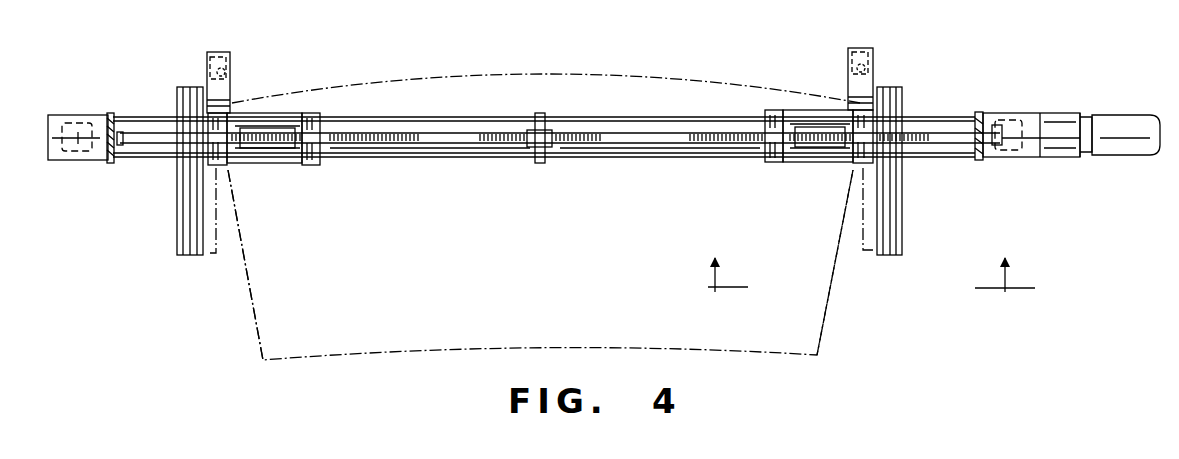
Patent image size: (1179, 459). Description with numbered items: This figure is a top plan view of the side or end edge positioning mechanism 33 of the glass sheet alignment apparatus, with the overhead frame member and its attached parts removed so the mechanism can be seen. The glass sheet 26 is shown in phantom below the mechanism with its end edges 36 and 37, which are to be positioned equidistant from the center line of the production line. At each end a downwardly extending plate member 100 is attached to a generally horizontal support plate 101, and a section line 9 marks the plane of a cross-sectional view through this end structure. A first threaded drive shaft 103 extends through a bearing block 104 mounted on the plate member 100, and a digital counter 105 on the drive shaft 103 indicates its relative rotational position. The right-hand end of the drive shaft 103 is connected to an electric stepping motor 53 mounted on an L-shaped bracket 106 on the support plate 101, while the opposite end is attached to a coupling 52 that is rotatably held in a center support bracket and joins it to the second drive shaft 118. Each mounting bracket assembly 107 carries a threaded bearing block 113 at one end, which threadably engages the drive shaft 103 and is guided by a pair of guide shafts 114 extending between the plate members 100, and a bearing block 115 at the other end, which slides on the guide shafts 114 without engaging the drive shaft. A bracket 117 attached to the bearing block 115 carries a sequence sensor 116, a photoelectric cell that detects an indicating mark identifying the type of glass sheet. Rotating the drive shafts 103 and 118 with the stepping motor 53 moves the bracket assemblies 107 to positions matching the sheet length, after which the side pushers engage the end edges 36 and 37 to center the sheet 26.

The section line 9 is at (862, 289).
The glass sheet 26 is at (824, 338).
The side or end edge positioning mechanism 33 is at (170, 233).
The end edge 36 is at (832, 287).
The end edge 37 is at (247, 270).
The coupling 52 is at (530, 146).
The electric stepping motor 53 is at (1143, 120).
The plate member 100 is at (110, 114).
The support plate 101 is at (1028, 152).
The first threaded drive shaft 103 is at (605, 135).
The bearing block 104 is at (973, 116).
The digital counter 105 is at (990, 160).
The L-shaped bracket 106 is at (542, 163).
The mounting bracket assembly 107 is at (282, 113).
The threaded bearing block 113 is at (315, 165).
The guide shafts 114 is at (675, 117).
The bearing block 115 is at (225, 165).
The sequence sensor 116 is at (224, 70).
The bracket 117 is at (216, 55).
The drive shaft 118 is at (420, 134).